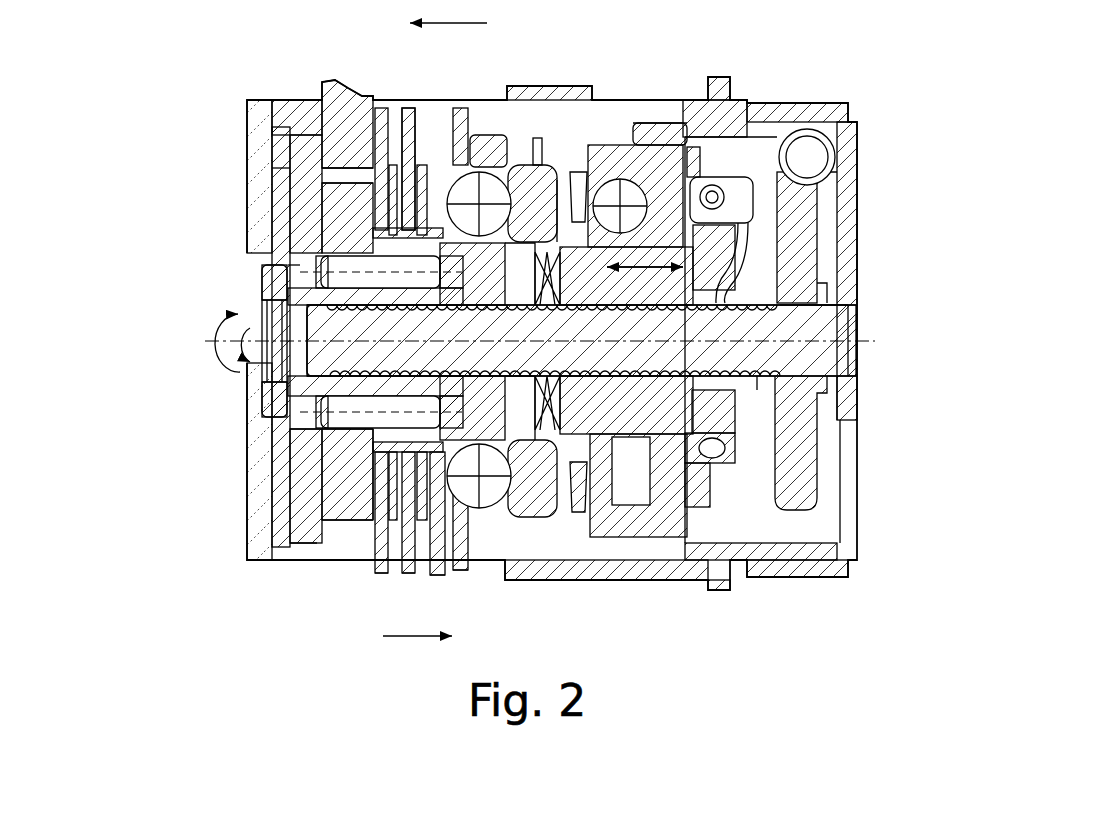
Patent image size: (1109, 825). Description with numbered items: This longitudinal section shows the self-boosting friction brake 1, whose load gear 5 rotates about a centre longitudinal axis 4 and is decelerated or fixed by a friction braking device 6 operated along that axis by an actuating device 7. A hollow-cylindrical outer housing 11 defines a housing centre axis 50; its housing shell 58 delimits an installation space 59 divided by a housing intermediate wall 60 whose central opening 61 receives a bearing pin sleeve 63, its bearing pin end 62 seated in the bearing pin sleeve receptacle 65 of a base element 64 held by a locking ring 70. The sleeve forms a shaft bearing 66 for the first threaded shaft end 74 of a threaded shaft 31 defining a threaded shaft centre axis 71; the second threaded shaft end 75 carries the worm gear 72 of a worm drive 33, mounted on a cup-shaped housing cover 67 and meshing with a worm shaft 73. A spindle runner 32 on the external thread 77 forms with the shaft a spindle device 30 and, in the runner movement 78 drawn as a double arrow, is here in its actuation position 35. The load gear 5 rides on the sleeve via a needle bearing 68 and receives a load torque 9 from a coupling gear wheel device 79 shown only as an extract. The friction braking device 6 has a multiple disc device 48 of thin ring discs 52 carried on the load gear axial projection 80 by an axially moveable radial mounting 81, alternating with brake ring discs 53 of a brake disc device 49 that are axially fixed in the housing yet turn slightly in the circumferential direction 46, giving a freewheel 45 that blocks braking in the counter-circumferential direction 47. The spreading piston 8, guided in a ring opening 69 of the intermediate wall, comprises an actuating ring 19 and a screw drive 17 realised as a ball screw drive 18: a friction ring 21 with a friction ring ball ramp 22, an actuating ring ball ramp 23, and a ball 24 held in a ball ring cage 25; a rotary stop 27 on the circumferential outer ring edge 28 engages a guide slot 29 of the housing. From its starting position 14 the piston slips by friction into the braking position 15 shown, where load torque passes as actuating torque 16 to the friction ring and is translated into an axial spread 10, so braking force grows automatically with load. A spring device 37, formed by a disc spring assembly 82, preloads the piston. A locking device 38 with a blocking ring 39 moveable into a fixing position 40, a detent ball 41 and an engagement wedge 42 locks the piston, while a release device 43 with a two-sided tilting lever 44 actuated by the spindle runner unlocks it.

The friction brake 1 is at (216, 94).
The centre longitudinal axis 4 is at (617, 333).
The load gear 5 is at (360, 470).
The friction braking device 6 is at (553, 518).
The actuating device 7 is at (683, 422).
The spreading piston 8 is at (400, 180).
The load torque 9 is at (200, 340).
The axial spread 10 is at (437, 578).
The outer housing 11 is at (650, 138).
The starting position 14 is at (246, 194).
The braking position 15 is at (246, 194).
The actuating torque 16 is at (155, 343).
The screw drive 17 is at (330, 190).
The ball screw drive 18 is at (352, 301).
The actuating ring 19 is at (568, 148).
The friction ring 21 is at (418, 183).
The friction ring ball ramp 22 is at (375, 500).
The actuating ring ball ramp 23 is at (493, 494).
The ball 24 is at (352, 301).
The ball ring cage 25 is at (462, 108).
The rotary stop 27 is at (455, 578).
The circumferential outer ring edge 28 is at (450, 158).
The guide slot 29 is at (435, 349).
The spindle device 30 is at (880, 318).
The threaded shaft 31 is at (840, 344).
The spindle runner 32 is at (652, 520).
The worm drive 33 is at (820, 152).
The actuation position 35 is at (655, 408).
The spring device 37 is at (626, 340).
The locking device 38 is at (774, 66).
The blocking ring 39 is at (658, 108).
The fixing position 40 is at (747, 102).
The detent ball 41 is at (628, 198).
The engagement wedge 42 is at (518, 256).
The release device 43 is at (829, 225).
The tilting lever 44 is at (760, 203).
The freewheel 45 is at (356, 570).
The circumferential direction 46 is at (155, 343).
The counter-circumferential direction 47 is at (236, 366).
The multiple disc device 48 is at (377, 623).
The brake disc device 49 is at (277, 577).
The housing centre axis 50 is at (617, 333).
The ring discs 52 is at (400, 575).
The brake ring discs 53 is at (383, 548).
The housing shell 58 is at (622, 123).
The installation space 59 is at (549, 158).
The housing intermediate wall 60 is at (513, 178).
The opening 61 is at (560, 372).
The bearing pin end 62 is at (278, 398).
The bearing pin sleeve 63 is at (268, 290).
The base element 64 is at (292, 168).
The bearing pin sleeve receptacle 65 is at (288, 273).
The shaft bearing 66 is at (490, 300).
The housing cover 67 is at (850, 500).
The needle bearing 68 is at (330, 425).
The ring opening 69 is at (538, 128).
The locking ring 70 is at (275, 140).
The threaded shaft centre axis 71 is at (870, 325).
The worm gear 72 is at (805, 238).
The worm shaft 73 is at (875, 162).
The first threaded shaft end 74 is at (420, 353).
The second threaded shaft end 75 is at (842, 388).
The external thread 77 is at (757, 376).
The runner movement 78 is at (645, 286).
The coupling gear wheel device 79 is at (322, 103).
The load gear axial projection 80 is at (330, 450).
The radial mounting 81 is at (330, 266).
The disc spring assembly 82 is at (585, 303).